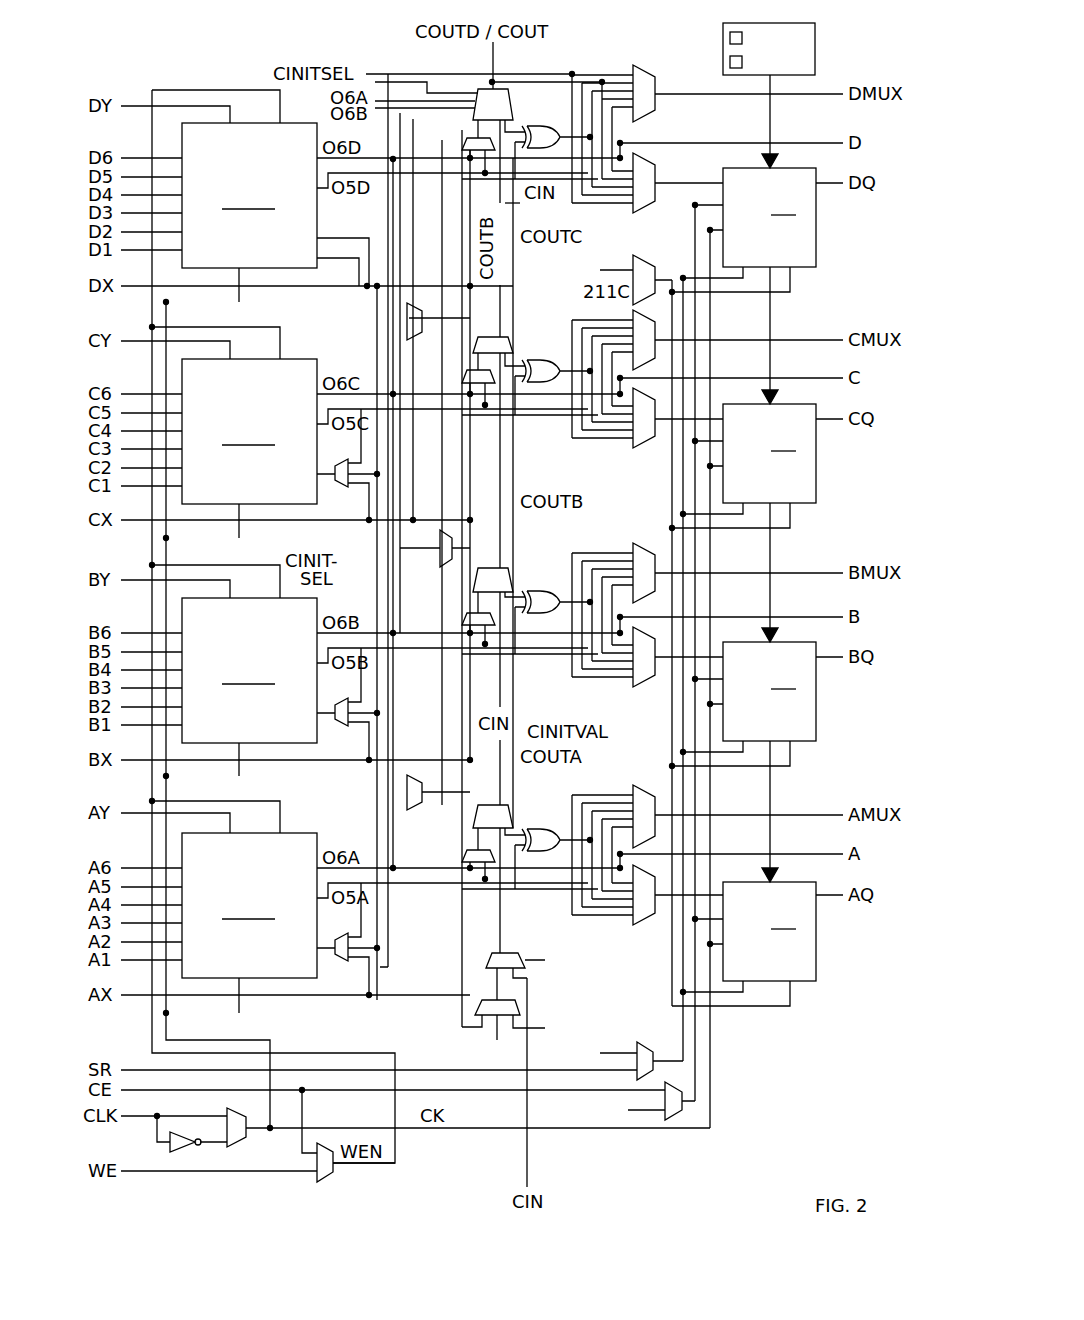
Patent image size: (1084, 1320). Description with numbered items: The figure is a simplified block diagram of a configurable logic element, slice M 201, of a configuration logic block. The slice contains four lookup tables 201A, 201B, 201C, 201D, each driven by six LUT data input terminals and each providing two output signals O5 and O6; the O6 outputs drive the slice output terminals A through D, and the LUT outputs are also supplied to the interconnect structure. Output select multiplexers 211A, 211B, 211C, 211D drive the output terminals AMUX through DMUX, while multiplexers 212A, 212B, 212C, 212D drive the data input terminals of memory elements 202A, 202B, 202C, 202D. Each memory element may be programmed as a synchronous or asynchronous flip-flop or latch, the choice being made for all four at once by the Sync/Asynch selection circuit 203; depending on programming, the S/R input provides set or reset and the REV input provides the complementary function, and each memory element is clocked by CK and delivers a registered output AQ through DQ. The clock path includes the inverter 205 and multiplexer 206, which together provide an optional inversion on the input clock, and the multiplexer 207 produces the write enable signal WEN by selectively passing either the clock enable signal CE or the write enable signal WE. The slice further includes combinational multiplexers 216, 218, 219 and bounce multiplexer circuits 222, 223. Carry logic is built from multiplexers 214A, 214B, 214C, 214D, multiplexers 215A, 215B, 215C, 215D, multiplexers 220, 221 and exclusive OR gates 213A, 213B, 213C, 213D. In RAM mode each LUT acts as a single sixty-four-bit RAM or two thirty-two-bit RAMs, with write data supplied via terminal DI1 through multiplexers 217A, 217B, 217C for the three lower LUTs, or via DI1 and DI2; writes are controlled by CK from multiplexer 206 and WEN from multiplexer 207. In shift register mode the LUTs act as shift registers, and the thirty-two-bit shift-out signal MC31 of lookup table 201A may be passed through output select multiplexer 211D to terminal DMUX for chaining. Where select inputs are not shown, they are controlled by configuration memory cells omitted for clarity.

The slice M 201 is at (206, 66).
The lookup table (LUTM) 201A is at (270, 946).
The lookup table (LUTM) 201B is at (270, 711).
The lookup table (LUTM) 201C is at (270, 472).
The lookup table (LUTM) 201D is at (270, 236).
The memory element 202A is at (810, 953).
The memory element 202B is at (810, 713).
The memory element 202C is at (810, 475).
The memory element 202D is at (810, 239).
The Sync/Asynch selection circuit 203 is at (722, 62).
The inverter 205 is at (180, 1150).
The multiplexer 206 is at (242, 1140).
The multiplexer 207 is at (323, 1183).
The output select multiplexer 211A is at (632, 790).
The output select multiplexer 211B is at (632, 548).
The output select multiplexer 211C is at (632, 314).
The output select multiplexer 211D is at (648, 100).
The multiplexer 212A is at (640, 926).
The multiplexer 212B is at (640, 688).
The multiplexer 212C is at (640, 450).
The multiplexer 212D is at (648, 160).
The exclusive OR gate 213A is at (540, 823).
The exclusive OR gate 213B is at (540, 584).
The exclusive OR gate 213C is at (540, 352).
The exclusive OR gate 213D is at (545, 118).
The carry multiplexer 214A is at (485, 808).
The carry multiplexer 214B is at (485, 572).
The carry multiplexer 214C is at (485, 340).
The carry multiplexer 214D is at (507, 92).
The carry multiplexer 215A is at (490, 865).
The carry multiplexer 215B is at (490, 628).
The carry multiplexer 215C is at (490, 386).
The carry multiplexer 215D is at (465, 152).
The combinational multiplexer 216 is at (414, 300).
The multiplexer 217A is at (341, 964).
The multiplexer 217B is at (341, 729).
The multiplexer 217C is at (341, 490).
The combinational multiplexer 218 is at (431, 546).
The combinational multiplexer 219 is at (418, 812).
The carry multiplexer 220 is at (518, 1002).
The carry multiplexer 221 is at (636, 262).
The bounce multiplexer circuit 222 is at (639, 1046).
The bounce multiplexer circuit 223 is at (672, 1118).